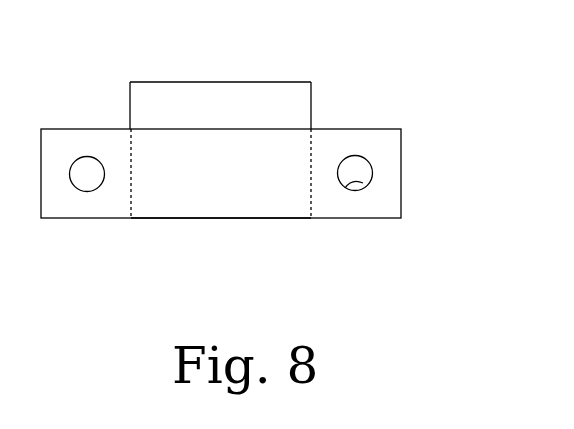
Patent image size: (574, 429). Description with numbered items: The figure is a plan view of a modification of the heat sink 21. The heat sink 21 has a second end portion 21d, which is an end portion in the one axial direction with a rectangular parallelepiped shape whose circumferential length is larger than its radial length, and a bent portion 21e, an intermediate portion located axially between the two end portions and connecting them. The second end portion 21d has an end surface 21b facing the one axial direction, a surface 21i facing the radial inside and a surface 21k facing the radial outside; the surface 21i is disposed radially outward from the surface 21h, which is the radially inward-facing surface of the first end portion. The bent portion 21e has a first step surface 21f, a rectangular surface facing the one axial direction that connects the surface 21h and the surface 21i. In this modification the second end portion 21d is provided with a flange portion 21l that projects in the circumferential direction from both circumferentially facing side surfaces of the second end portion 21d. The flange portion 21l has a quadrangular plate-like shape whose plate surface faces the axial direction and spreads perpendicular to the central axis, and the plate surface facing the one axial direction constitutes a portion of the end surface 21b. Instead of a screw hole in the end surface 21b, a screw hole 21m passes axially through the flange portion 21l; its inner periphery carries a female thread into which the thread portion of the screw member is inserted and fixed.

The heat sink 21 is at (246, 151).
The end surface 21b is at (220, 208).
The second end portion 21d is at (172, 194).
The bent portion 21e is at (193, 72).
The first step surface 21f is at (245, 100).
The surface 21h is at (285, 82).
The surface 21i is at (166, 128).
The surface 21k is at (226, 221).
The flange portion 21l is at (66, 203).
The screw hole 21m is at (358, 190).